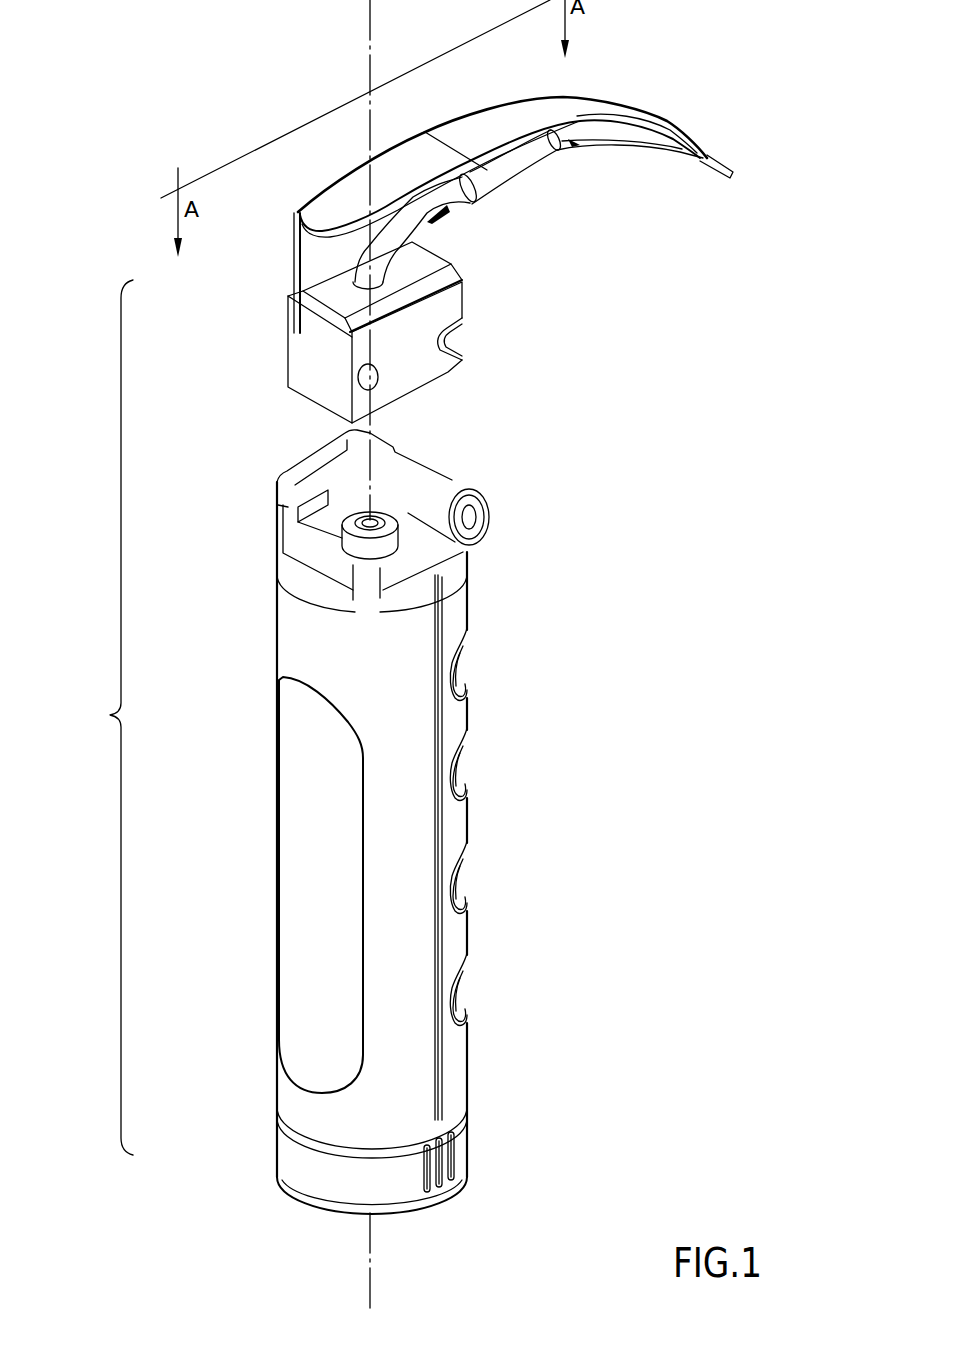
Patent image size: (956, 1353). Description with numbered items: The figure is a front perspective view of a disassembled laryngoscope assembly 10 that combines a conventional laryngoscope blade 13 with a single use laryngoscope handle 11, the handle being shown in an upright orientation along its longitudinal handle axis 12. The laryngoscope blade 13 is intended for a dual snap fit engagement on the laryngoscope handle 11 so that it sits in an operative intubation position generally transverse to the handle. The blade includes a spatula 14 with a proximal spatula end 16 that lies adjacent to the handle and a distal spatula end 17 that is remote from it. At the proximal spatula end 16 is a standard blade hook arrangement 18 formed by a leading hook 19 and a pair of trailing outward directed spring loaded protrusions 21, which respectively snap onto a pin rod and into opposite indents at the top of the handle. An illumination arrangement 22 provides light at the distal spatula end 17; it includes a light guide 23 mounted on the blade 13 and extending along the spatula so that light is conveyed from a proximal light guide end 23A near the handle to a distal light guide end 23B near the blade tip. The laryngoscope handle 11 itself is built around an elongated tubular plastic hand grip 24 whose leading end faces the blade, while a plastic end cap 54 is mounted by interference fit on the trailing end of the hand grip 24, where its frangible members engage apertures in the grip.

The laryngoscope assembly 10 is at (101, 717).
The single use laryngoscope handle 11 is at (422, 847).
The longitudinal handle axis 12 is at (370, 39).
The laryngoscope blade 13 is at (578, 188).
The spatula 14 is at (481, 122).
The proximal spatula end 16 is at (308, 353).
The distal spatula end 17 is at (666, 124).
The blade hook arrangement 18 is at (524, 304).
The leading hook 19 is at (465, 342).
The trailing outward directed spring loaded protrusions 21 is at (372, 382).
The illumination arrangement 22 is at (745, 489).
The light guide 23 is at (462, 198).
The proximal light guide end 23A is at (370, 263).
The distal light guide end 23B is at (574, 140).
The elongated tubular plastic hand grip 24 is at (422, 960).
The plastic end cap 54 is at (453, 1150).